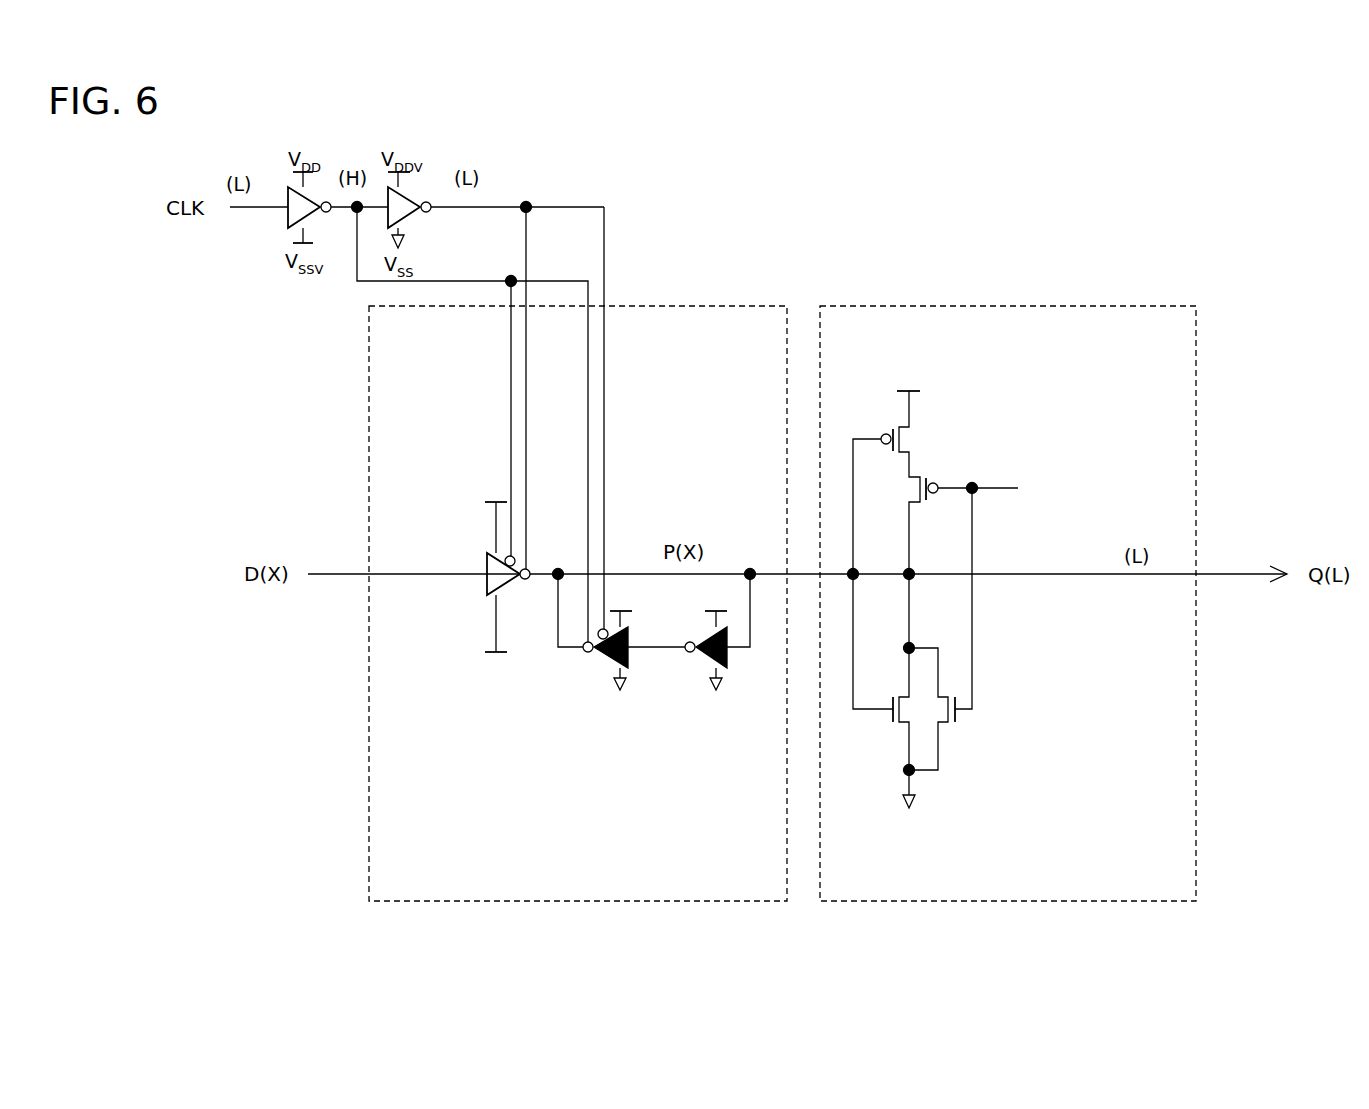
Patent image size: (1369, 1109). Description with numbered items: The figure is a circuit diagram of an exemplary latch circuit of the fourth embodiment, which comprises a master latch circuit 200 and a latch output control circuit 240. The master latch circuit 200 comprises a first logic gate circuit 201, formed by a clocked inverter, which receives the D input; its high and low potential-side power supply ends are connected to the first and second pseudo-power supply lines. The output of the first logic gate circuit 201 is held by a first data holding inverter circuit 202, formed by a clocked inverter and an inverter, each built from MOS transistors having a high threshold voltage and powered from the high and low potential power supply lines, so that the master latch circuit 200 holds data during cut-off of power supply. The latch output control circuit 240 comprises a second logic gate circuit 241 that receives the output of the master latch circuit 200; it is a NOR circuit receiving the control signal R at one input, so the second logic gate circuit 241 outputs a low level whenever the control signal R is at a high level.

The master latch circuit 200 is at (646, 902).
The first logic gate circuit 201 is at (457, 513).
The first data holding inverter circuit 202 is at (666, 746).
The latch output control circuit 240 is at (1037, 903).
The second logic gate circuit 241 is at (983, 747).